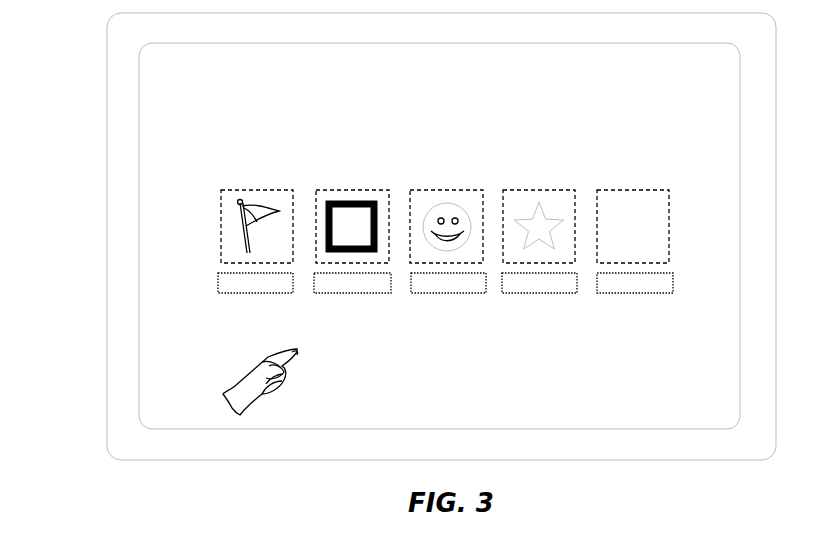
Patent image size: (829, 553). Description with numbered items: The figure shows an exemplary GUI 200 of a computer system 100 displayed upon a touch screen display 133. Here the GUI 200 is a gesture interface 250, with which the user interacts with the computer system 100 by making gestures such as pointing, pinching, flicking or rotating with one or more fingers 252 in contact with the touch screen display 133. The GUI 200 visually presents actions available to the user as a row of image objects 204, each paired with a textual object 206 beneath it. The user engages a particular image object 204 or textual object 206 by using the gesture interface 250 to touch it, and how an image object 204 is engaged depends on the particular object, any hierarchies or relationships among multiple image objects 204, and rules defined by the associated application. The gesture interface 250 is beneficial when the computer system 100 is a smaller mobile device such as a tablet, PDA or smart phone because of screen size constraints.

The computer system 100 is at (107, 50).
The touch screen display 133 is at (139, 104).
The GUI 200 is at (172, 143).
The gesture interface 250 is at (247, 110).
The image object 204 is at (262, 190).
The textual object 206 is at (263, 294).
The finger 252 is at (298, 352).